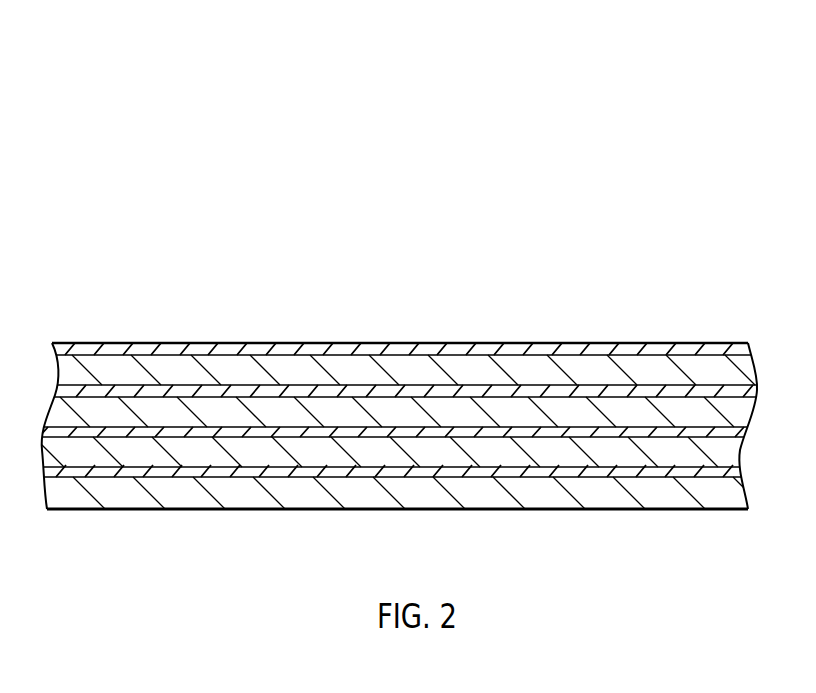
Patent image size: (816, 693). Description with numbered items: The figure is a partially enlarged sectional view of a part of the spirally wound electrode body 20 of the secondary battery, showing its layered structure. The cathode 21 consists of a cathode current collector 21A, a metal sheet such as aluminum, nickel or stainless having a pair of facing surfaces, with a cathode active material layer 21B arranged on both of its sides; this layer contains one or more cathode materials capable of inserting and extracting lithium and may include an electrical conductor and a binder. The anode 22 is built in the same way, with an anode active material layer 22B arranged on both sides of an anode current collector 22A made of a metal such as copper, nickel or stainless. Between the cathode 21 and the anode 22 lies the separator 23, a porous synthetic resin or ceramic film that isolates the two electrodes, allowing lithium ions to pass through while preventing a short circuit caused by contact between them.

The spirally wound electrode body 20 is at (680, 158).
The cathode 21 is at (290, 260).
The cathode current collector 21A is at (105, 392).
The cathode active material layer 21B is at (223, 417).
The anode 22 is at (612, 261).
The anode current collector 22A is at (423, 475).
The anode active material layer 22B is at (527, 495).
The separator 23 is at (670, 432).